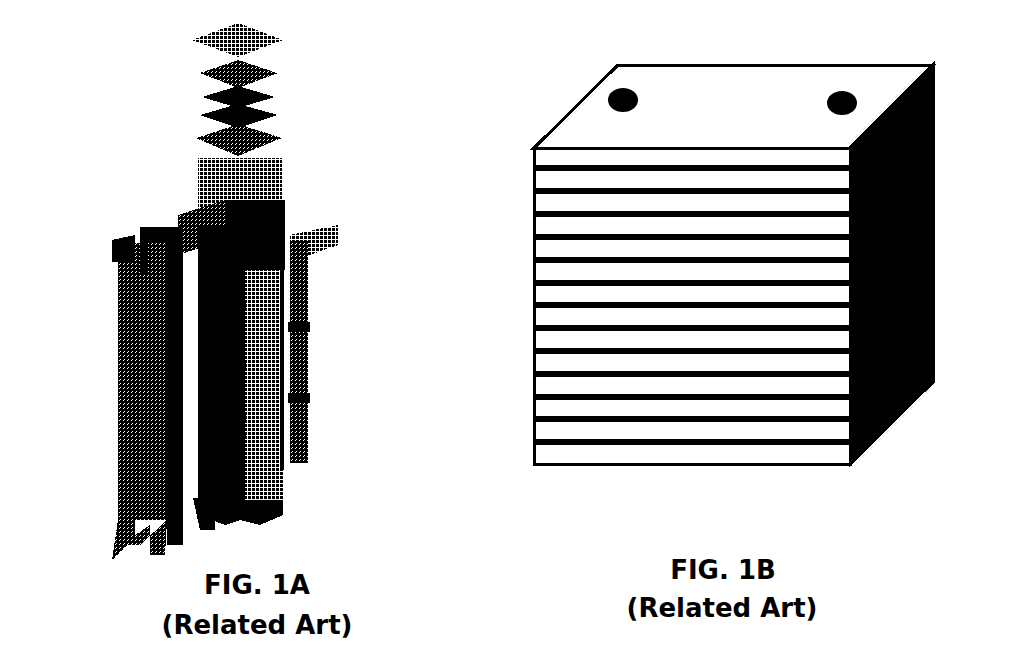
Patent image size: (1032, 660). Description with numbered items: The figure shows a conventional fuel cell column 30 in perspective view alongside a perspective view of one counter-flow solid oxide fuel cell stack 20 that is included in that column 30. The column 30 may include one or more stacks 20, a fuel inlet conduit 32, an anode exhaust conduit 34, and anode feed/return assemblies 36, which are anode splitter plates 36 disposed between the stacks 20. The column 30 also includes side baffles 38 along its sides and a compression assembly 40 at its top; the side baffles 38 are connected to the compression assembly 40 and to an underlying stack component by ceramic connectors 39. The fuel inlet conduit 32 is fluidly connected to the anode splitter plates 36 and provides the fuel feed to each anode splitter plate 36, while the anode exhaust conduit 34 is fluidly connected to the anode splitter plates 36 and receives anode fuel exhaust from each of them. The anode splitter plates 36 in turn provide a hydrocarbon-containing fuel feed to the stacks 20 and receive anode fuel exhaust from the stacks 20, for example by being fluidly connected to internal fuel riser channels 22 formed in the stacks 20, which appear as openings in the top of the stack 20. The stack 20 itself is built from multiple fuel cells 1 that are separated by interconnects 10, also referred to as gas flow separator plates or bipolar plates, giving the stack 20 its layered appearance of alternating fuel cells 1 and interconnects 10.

In FIG. 1B, the fuel cell 1 is at (533, 368).
In FIG. 1B, the interconnect 10 is at (533, 252).
In FIG. 1A, the counter-flow SOFC stack 20 is at (205, 303).
In FIG. 1B, the counter-flow SOFC stack 20 is at (681, 280).
In FIG. 1B, the internal fuel riser channel 22 is at (607, 98).
In FIG. 1A, the fuel cell column 30 is at (295, 222).
In FIG. 1A, the fuel inlet conduit 32 is at (253, 463).
In FIG. 1A, the anode exhaust conduit 34 is at (300, 437).
In FIG. 1A, the anode feed/return assembly 36 is at (300, 328).
In FIG. 1A, the side baffle 38 is at (148, 425).
In FIG. 1A, the ceramic connector 39 is at (118, 252).
In FIG. 1A, the compression assembly 40 is at (188, 42).